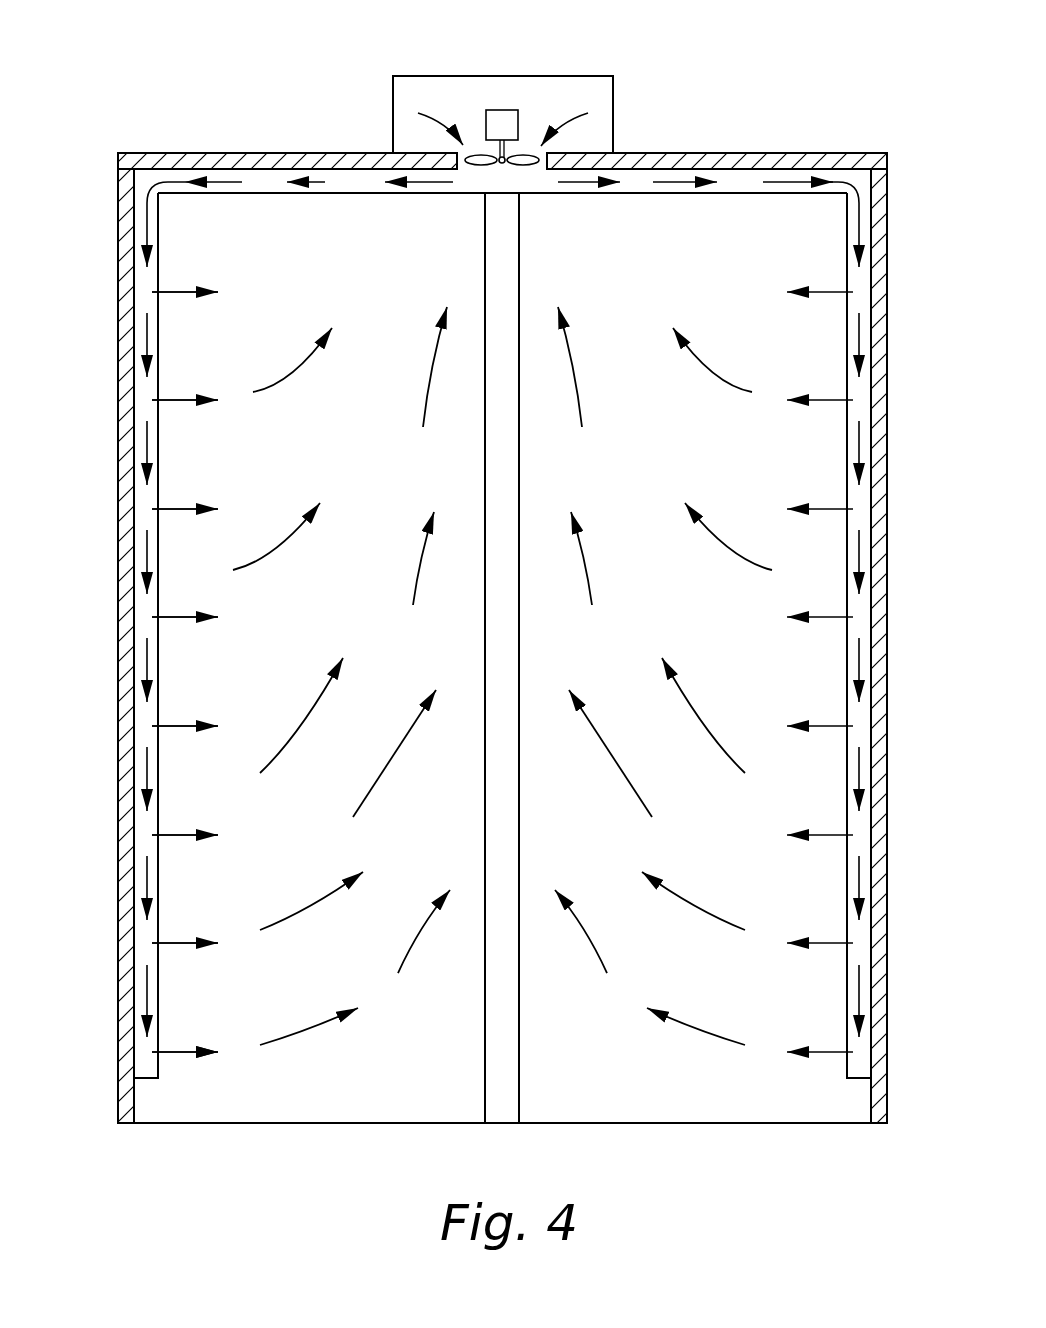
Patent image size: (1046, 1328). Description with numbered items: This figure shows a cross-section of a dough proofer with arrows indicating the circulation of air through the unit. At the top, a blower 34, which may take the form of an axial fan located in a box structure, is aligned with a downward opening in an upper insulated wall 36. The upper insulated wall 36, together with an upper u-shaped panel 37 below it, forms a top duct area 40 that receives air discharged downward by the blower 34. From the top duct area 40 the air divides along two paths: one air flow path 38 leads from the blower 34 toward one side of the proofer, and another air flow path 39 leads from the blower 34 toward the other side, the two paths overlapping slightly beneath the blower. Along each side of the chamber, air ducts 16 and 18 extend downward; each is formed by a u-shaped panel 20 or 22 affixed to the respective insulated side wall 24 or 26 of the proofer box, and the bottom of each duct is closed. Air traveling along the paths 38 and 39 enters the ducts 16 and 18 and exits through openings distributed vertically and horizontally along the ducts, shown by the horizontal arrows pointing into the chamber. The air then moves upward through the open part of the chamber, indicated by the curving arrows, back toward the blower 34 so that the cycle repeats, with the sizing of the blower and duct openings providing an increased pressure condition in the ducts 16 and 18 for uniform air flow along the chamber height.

The air duct 16 is at (147, 846).
The air duct 18 is at (858, 609).
The u-shaped panel 20 is at (158, 985).
The u-shaped panel 22 is at (847, 890).
The insulated side wall 24 is at (118, 728).
The insulated side wall 26 is at (887, 795).
The blower 34 is at (537, 107).
The upper insulated wall 36 is at (292, 152).
The upper u-shaped panel 37 is at (652, 193).
The air flow path 38 is at (222, 182).
The air flow path 39 is at (790, 182).
The top duct area 40 is at (477, 180).